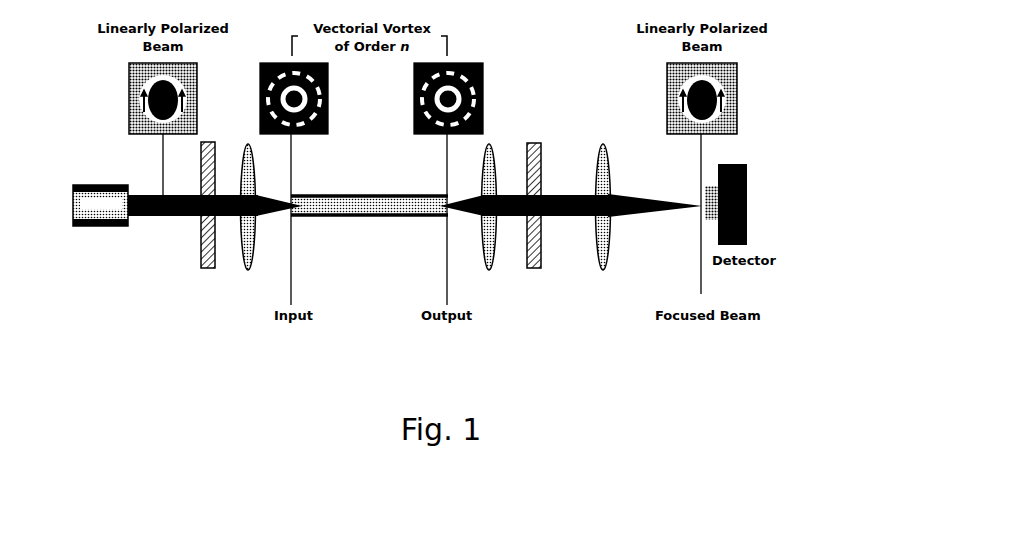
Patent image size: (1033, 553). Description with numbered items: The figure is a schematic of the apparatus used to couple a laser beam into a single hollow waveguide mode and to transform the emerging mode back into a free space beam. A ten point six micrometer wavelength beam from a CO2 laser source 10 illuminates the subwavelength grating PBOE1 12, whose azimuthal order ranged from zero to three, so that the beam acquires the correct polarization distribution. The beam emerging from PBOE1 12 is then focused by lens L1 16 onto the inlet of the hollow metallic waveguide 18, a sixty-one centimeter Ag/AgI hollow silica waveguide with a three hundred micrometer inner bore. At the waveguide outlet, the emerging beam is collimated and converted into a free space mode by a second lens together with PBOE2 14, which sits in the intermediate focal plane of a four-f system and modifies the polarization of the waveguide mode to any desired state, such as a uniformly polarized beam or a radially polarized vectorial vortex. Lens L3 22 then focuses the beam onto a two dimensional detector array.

The CO2 laser source 10 is at (80, 212).
The PBOE1 12 is at (200, 242).
The PBOE2 14 is at (542, 238).
The lens L1 16 is at (247, 272).
The waveguide 18 is at (357, 218).
The lens L3 22 is at (488, 275).